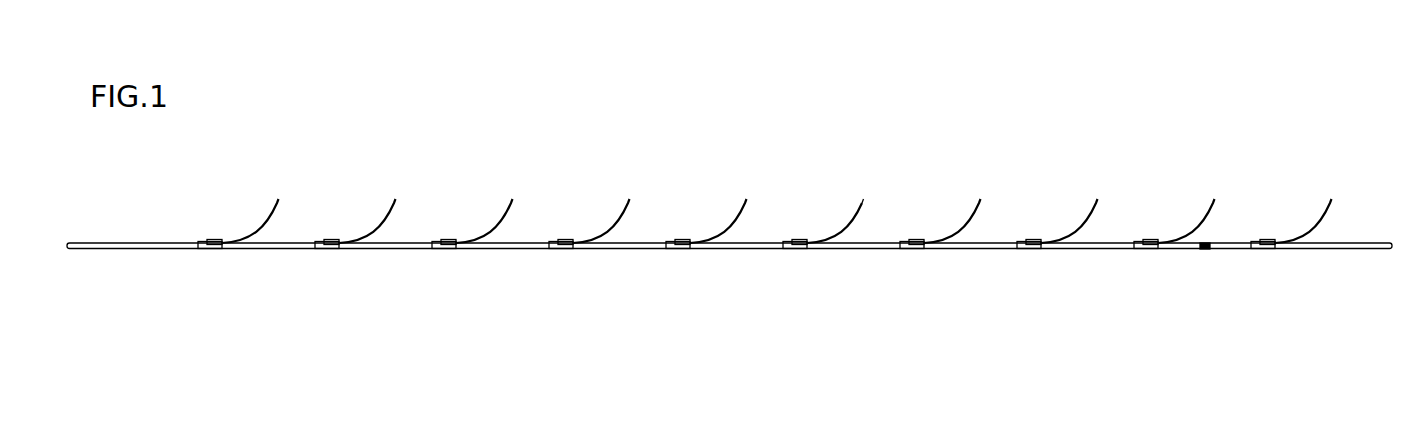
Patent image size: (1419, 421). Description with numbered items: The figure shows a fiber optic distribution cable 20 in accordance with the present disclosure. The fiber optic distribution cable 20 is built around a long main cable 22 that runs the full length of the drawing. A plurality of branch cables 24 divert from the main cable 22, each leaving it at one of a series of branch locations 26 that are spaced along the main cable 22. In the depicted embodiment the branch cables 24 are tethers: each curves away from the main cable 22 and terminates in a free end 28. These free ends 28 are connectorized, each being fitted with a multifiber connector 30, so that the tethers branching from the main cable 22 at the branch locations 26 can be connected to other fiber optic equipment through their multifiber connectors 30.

The fiber optic distribution cable 20 is at (590, 152).
The main cable 22 is at (507, 250).
The branch cables 24 is at (492, 230).
The branch locations 26 is at (433, 256).
The free ends 28 is at (853, 221).
The multifiber connectors 30 is at (862, 205).